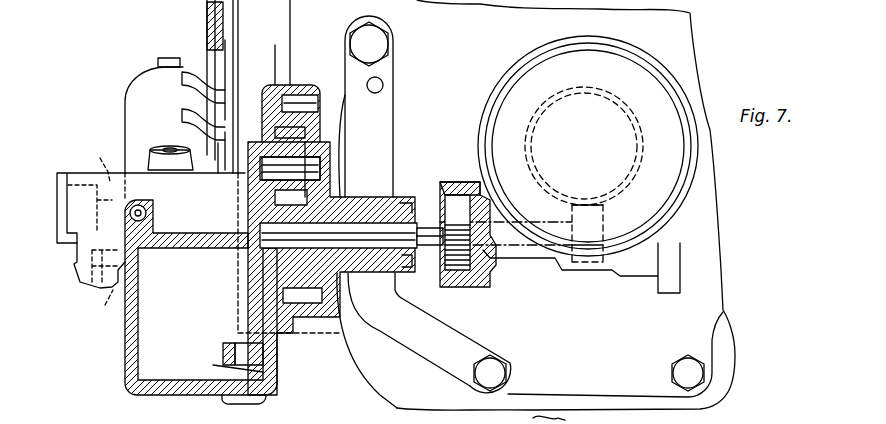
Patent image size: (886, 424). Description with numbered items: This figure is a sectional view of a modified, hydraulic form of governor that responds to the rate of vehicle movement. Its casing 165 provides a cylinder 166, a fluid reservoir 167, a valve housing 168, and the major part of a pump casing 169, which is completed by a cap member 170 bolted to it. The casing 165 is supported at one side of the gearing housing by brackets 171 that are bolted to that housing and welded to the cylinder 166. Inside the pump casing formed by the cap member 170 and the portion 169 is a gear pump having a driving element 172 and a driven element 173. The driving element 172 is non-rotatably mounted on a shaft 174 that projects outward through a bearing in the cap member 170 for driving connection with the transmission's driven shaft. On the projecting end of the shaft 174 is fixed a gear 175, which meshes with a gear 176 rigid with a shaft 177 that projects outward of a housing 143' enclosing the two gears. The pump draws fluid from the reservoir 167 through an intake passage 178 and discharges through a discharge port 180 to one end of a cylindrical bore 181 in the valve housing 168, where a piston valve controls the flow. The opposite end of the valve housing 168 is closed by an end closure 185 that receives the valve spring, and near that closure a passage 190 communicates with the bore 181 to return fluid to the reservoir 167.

The housing 143' is at (456, 172).
The casing 165 is at (283, 342).
The cylinder 166 is at (130, 118).
The fluid reservoir 167 is at (165, 386).
The valve housing 168 is at (198, 253).
The pump casing portion 169 is at (295, 88).
The cap member 170 is at (332, 182).
The brackets 171 is at (183, 92).
The driving element 172 is at (262, 254).
The driven element 173 is at (323, 138).
The shaft 174 is at (367, 273).
The gear 175 is at (592, 89).
The gear 176 is at (604, 209).
The shaft 177 is at (488, 260).
The intake passage 178 is at (230, 368).
The discharge port 180 is at (232, 240).
The cylindrical bore 181 is at (94, 162).
The end closure 185 is at (63, 243).
The passage 190 is at (90, 307).